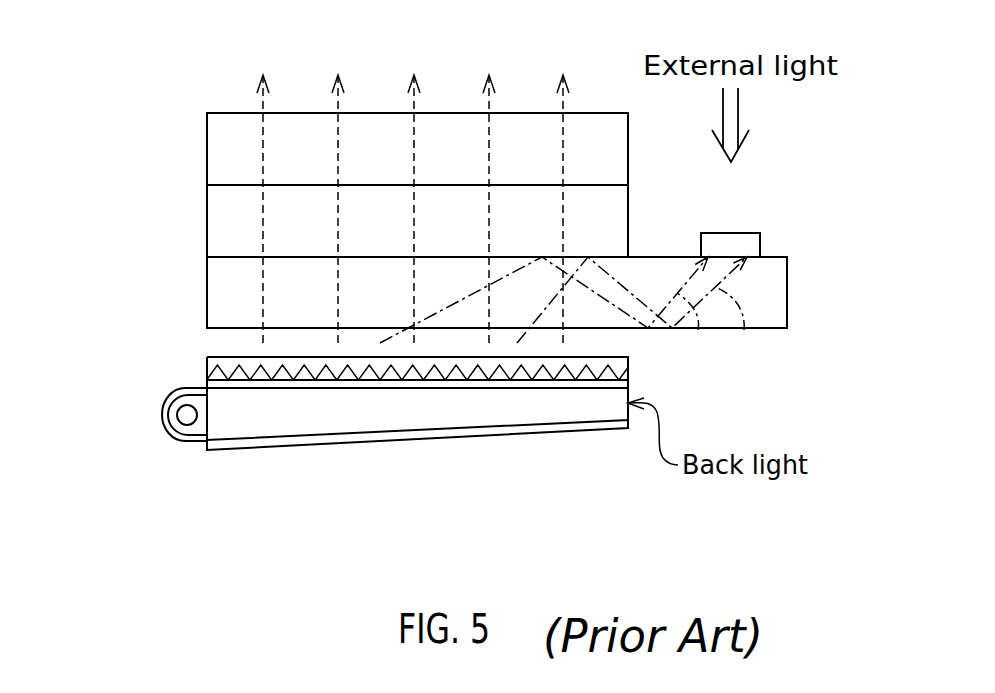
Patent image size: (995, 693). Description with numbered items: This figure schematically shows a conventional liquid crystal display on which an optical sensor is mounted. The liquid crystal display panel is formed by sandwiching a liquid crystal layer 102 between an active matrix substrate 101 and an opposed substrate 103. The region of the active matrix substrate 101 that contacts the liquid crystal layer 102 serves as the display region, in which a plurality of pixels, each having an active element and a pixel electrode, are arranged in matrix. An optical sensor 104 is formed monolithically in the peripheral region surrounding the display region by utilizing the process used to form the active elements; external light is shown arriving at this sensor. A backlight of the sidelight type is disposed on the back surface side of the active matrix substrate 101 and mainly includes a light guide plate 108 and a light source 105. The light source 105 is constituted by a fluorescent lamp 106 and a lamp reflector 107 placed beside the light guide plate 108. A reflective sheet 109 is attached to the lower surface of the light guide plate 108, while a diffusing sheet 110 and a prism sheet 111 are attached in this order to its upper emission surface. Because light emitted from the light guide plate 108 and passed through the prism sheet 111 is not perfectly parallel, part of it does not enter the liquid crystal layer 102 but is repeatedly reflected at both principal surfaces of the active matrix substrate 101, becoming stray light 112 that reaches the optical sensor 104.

The active matrix substrate 101 is at (207, 288).
The liquid crystal layer 102 is at (207, 222).
The opposed substrate 103 is at (207, 152).
The optical sensor 104 is at (743, 232).
The light source 105 is at (119, 418).
The fluorescent lamp 106 is at (181, 418).
The lamp reflector 107 is at (161, 409).
The light guide plate 108 is at (370, 415).
The reflective sheet 109 is at (302, 443).
The diffusing sheet 110 is at (207, 385).
The prism sheet 111 is at (207, 362).
The stray light 112 is at (698, 330).